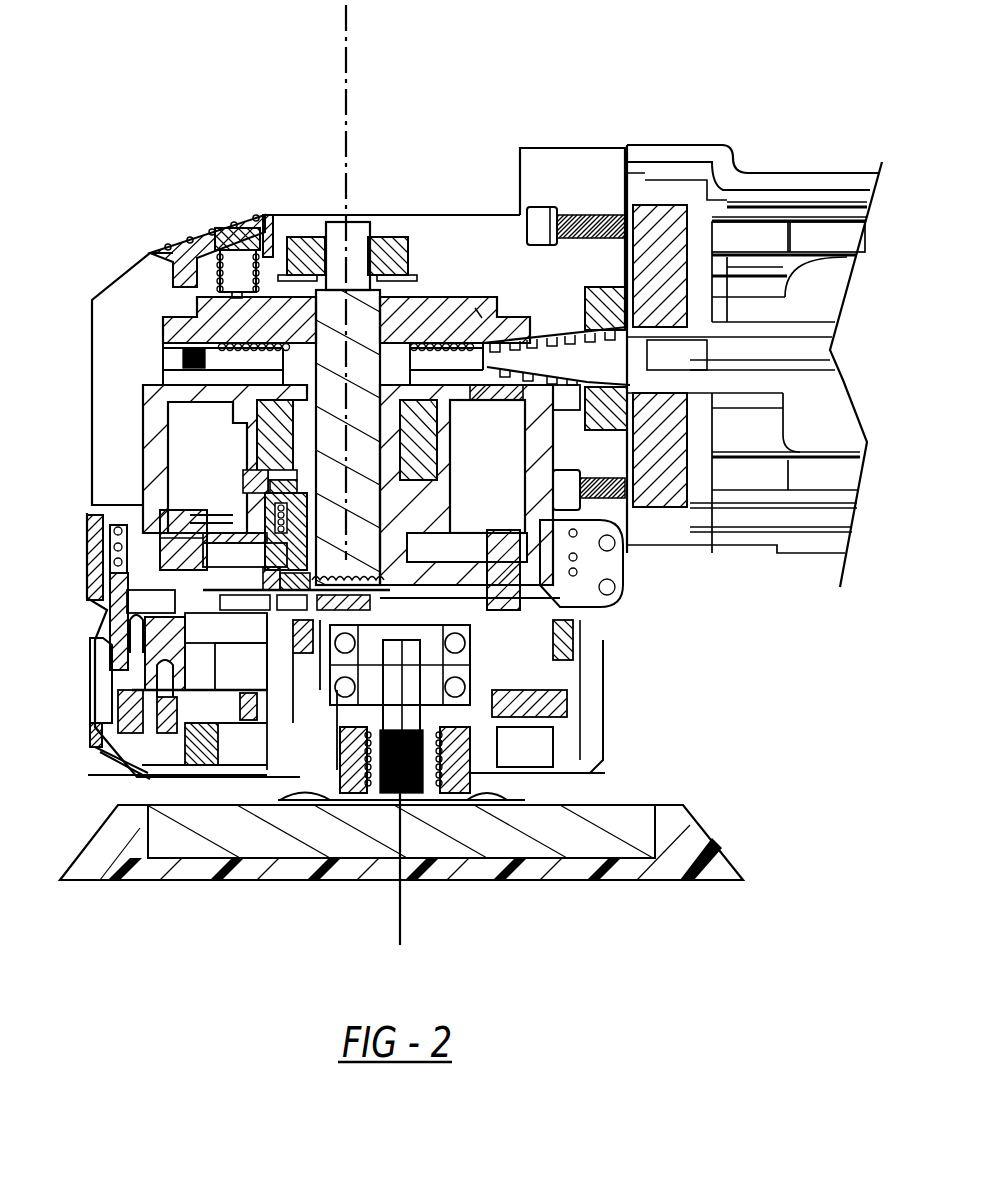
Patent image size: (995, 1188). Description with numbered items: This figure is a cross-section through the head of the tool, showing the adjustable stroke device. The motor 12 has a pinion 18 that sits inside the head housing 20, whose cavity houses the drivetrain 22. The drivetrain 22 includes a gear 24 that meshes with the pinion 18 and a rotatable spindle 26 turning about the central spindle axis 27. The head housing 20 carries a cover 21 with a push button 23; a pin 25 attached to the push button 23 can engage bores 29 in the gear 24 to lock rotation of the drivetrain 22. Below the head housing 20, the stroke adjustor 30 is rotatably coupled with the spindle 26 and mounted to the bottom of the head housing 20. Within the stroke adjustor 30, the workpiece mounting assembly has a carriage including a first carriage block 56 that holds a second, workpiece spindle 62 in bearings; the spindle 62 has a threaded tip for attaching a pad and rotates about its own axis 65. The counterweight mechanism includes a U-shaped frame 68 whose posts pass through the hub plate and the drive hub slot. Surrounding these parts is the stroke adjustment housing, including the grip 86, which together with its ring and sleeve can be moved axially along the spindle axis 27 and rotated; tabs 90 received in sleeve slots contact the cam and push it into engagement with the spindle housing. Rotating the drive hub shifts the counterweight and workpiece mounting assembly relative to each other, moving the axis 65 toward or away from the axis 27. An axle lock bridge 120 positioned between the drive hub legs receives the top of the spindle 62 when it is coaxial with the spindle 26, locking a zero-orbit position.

The motor 12 is at (825, 413).
The pinion 18 is at (567, 357).
The head housing 20 is at (113, 241).
The cover 21 is at (297, 213).
The drivetrain 22 is at (233, 448).
The push button 23 is at (212, 223).
The gear 24 is at (488, 312).
The pin 25 is at (262, 218).
The spindle 26 is at (360, 232).
The spindle axis 27 is at (348, 35).
The bores 29 is at (477, 310).
The stroke adjustor 30 is at (50, 672).
The first carriage block 56 is at (520, 622).
The spindle 62 is at (430, 693).
The axis 65 is at (400, 922).
The frame 68 is at (190, 586).
The grip 86 is at (100, 753).
The tabs 90 is at (118, 627).
The axle lock bridge 120 is at (565, 600).